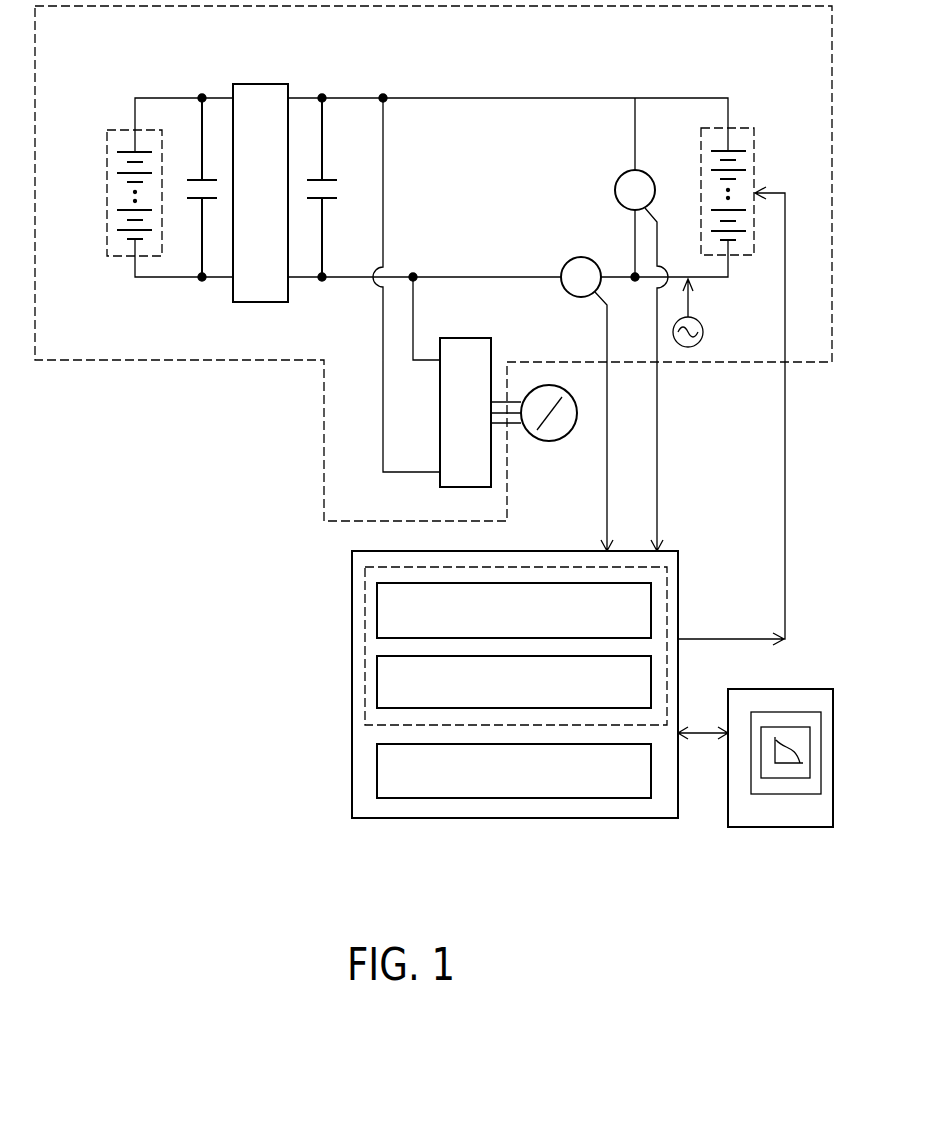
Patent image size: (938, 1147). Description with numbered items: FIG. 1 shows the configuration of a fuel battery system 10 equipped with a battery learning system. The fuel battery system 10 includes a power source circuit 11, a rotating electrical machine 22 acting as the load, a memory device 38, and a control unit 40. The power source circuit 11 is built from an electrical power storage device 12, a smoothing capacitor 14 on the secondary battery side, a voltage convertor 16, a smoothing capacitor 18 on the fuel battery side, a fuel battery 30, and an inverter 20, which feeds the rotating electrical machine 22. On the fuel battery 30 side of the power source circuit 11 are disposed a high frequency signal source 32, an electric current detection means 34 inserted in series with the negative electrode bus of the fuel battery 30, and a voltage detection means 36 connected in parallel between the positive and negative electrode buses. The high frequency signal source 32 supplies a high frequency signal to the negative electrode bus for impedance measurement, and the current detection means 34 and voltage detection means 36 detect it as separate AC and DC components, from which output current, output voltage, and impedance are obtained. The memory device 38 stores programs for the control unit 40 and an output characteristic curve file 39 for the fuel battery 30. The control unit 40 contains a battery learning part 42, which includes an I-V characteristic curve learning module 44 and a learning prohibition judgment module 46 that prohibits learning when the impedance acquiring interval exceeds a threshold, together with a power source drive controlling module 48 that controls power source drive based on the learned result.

The fuel battery system 10 is at (168, 478).
The power source circuit 11 is at (275, 361).
The electrical power storage device 12 is at (107, 222).
The smoothing capacitor on a secondary battery side 14 is at (196, 211).
The voltage convertor 16 is at (264, 84).
The smoothing capacitor on a fuel battery side 18 is at (336, 209).
The inverter 20 is at (440, 482).
The rotating electrical machine 22 is at (555, 441).
The fuel battery 30 is at (755, 160).
The high frequency signal source 32 is at (703, 327).
The electric current detection means 34 is at (570, 293).
The voltage detection means 36 is at (615, 191).
The memory device 38 is at (780, 757).
The output characteristic curve file 39 is at (811, 706).
The control unit 40 is at (453, 683).
The battery learning part 42 is at (456, 646).
The I-V characteristic curve learning module 44 is at (377, 612).
The learning prohibition judgment module 46 is at (377, 683).
The power source drive controlling module 48 is at (377, 770).